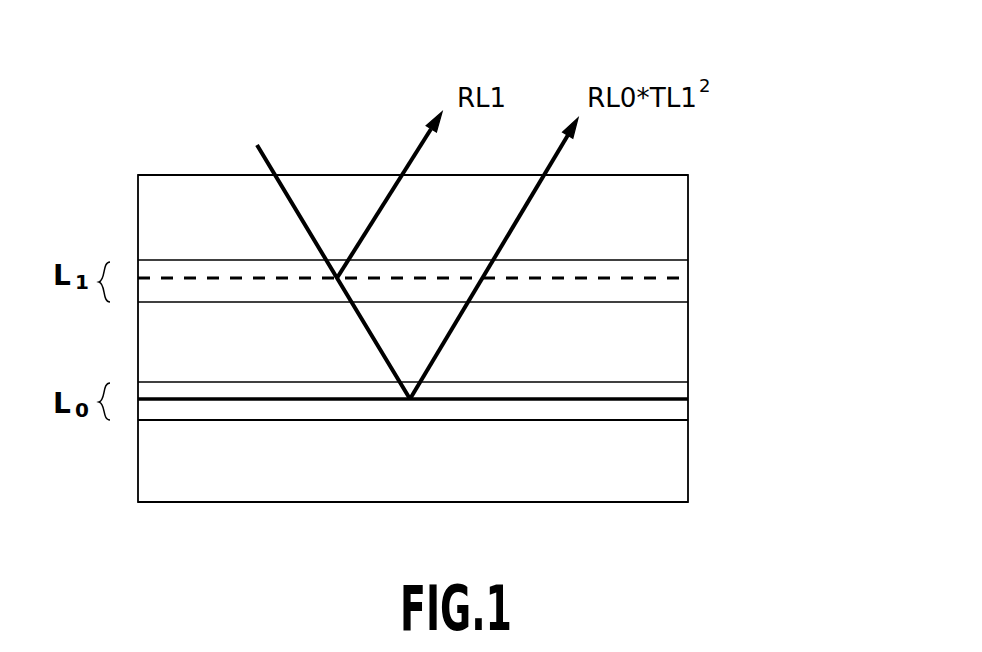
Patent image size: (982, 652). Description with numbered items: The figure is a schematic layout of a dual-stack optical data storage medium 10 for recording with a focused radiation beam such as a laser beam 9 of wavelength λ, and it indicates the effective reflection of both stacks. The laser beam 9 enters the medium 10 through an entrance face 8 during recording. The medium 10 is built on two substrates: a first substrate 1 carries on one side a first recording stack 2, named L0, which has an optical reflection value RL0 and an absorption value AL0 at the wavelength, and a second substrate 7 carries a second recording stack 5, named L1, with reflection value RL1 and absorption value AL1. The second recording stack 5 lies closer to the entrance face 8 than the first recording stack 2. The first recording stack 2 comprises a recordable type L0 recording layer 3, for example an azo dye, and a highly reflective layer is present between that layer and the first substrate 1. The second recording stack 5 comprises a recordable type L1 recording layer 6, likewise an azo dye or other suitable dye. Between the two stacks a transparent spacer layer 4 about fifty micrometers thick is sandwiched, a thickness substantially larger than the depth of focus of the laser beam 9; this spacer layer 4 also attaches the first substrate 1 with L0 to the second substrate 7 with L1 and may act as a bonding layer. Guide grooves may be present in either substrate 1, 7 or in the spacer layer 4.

The first substrate 1 is at (638, 477).
The first recording stack 2 is at (660, 409).
The L0 recording layer 3 is at (660, 398).
The transparent spacer layer 4 is at (665, 340).
The second recording stack 5 is at (658, 288).
The L1 recording layer 6 is at (658, 275).
The second substrate 7 is at (658, 193).
The entrance face 8 is at (628, 174).
The laser beam 9 is at (275, 176).
The dual-stack optical data storage medium 10 is at (724, 112).